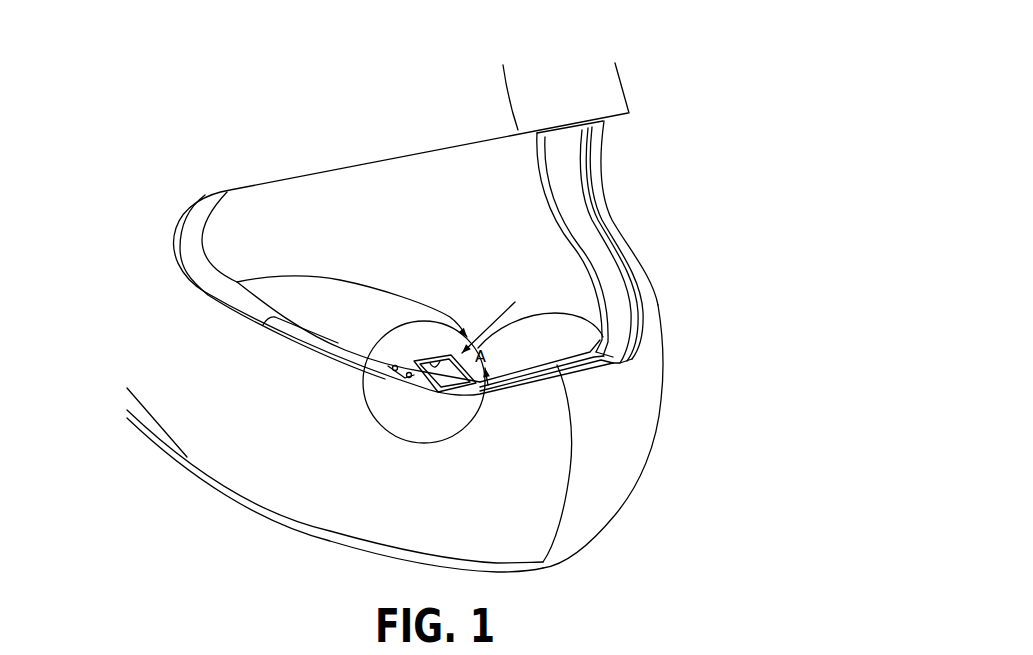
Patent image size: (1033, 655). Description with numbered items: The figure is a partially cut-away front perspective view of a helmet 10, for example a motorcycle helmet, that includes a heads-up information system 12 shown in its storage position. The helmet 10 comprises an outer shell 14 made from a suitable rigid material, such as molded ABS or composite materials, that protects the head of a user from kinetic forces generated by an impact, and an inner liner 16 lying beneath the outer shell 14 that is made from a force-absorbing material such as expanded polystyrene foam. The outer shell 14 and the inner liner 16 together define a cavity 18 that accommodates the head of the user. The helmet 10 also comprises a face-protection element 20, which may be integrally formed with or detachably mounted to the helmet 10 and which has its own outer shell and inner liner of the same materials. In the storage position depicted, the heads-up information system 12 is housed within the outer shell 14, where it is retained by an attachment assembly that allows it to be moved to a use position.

The helmet 10 is at (680, 88).
The heads-up information system 12 is at (630, 338).
The outer shell 14 is at (213, 350).
The inner liner 16 is at (607, 265).
The cavity 18 is at (495, 263).
The face-protection element 20 is at (578, 497).